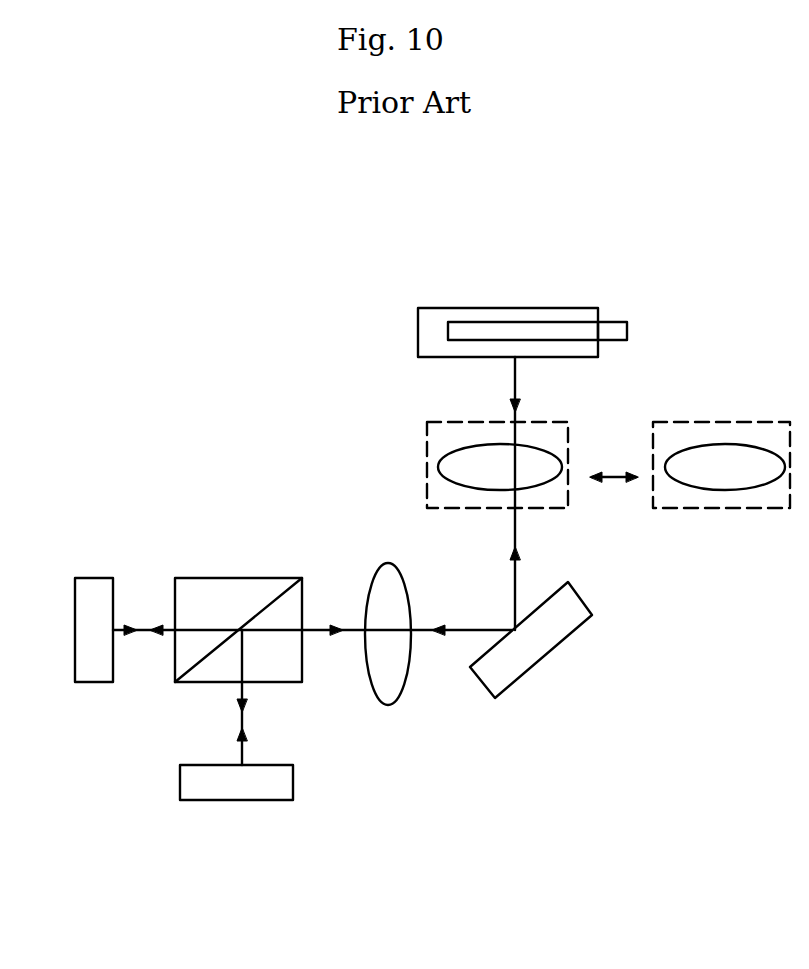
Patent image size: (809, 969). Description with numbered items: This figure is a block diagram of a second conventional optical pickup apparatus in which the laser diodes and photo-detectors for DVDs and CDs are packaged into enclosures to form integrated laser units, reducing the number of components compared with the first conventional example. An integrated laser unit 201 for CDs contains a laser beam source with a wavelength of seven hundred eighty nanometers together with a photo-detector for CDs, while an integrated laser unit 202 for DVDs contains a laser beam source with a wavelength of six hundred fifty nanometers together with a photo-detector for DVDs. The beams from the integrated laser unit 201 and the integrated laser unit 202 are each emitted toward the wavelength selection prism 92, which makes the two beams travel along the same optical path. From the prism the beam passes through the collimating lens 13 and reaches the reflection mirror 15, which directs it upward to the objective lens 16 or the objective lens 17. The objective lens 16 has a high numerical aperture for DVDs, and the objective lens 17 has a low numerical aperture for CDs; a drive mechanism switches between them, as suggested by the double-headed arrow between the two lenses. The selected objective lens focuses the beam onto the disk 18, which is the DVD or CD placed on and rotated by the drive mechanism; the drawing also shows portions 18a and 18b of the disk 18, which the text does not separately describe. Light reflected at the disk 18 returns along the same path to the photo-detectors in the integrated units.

The disk 18 is at (491, 308).
The information recording layer 18b is at (560, 308).
The substrate 18a is at (617, 325).
The objective lens 16 is at (440, 460).
The objective lens 17 is at (745, 452).
The reflection mirror 15 is at (543, 657).
The collimating lens 13 is at (387, 563).
The wavelength selection prism 92 is at (246, 578).
The integrated laser unit for CDs 201 is at (95, 578).
The integrated laser unit for DVDs 202 is at (210, 790).